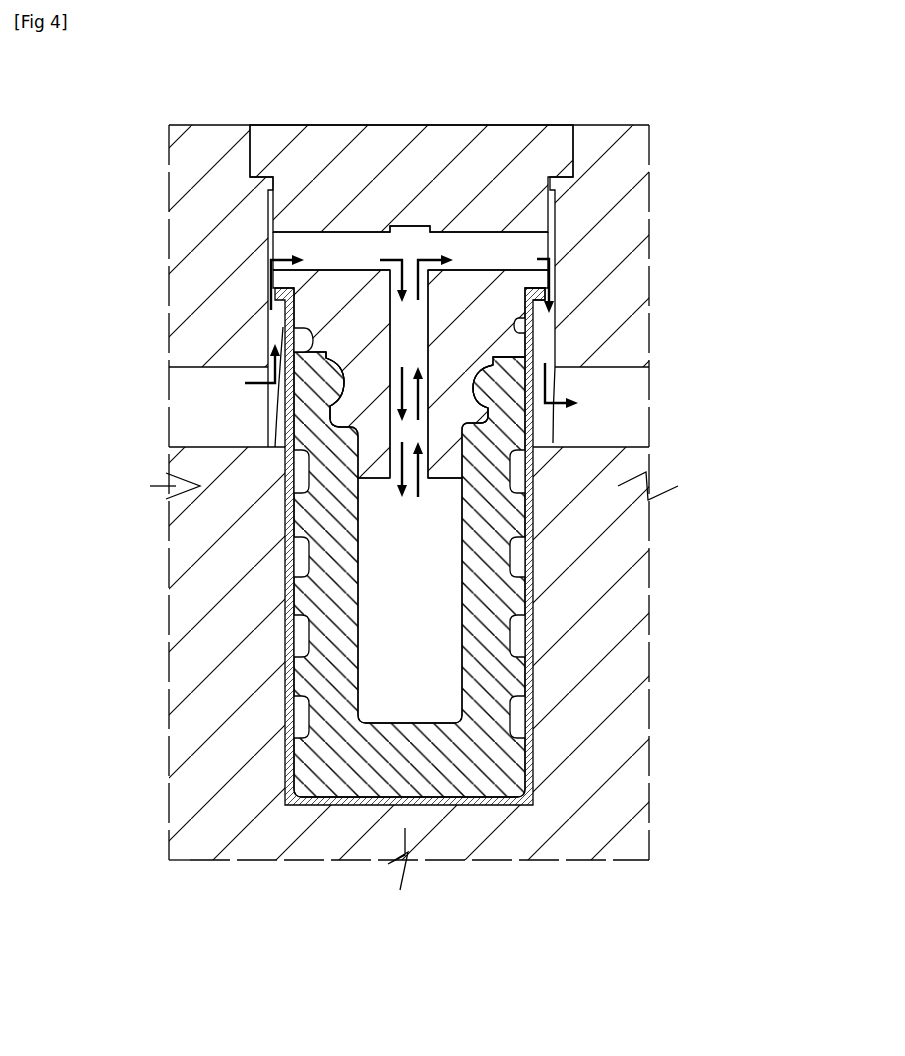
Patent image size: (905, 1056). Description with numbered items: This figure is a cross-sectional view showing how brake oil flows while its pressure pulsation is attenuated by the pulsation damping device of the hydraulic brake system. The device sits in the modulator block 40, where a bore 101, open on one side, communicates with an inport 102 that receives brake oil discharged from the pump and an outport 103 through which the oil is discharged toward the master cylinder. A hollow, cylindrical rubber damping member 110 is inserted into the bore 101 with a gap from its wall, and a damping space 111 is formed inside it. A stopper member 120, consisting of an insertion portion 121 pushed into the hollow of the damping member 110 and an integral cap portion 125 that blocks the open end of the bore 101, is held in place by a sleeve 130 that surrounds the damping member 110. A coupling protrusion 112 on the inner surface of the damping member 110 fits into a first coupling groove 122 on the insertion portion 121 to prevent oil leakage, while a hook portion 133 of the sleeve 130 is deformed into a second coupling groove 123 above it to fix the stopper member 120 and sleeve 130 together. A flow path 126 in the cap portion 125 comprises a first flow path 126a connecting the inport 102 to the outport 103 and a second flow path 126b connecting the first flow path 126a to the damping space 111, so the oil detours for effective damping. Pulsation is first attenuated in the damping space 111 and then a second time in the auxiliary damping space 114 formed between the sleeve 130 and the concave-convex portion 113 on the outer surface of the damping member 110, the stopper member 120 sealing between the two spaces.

The modulator block 40 is at (185, 147).
The bore 101 is at (283, 780).
The inport 102 is at (190, 432).
The outport 103 is at (630, 424).
The damping member 110 is at (407, 557).
The damping space 111 is at (386, 622).
The coupling protrusion 112 is at (486, 392).
The concave-convex portion 113 is at (307, 557).
The auxiliary damping space 114 is at (517, 560).
The stopper member 120 is at (514, 289).
The insertion portion 121 is at (513, 292).
The first coupling groove 122 is at (470, 366).
The second coupling groove 123 is at (300, 336).
The cap portion 125 is at (547, 155).
The flow path 126 is at (300, 361).
The first flow path 126a is at (295, 247).
The second flow path 126b is at (401, 346).
The sleeve 130 is at (488, 541).
The hook portion 133 is at (527, 328).